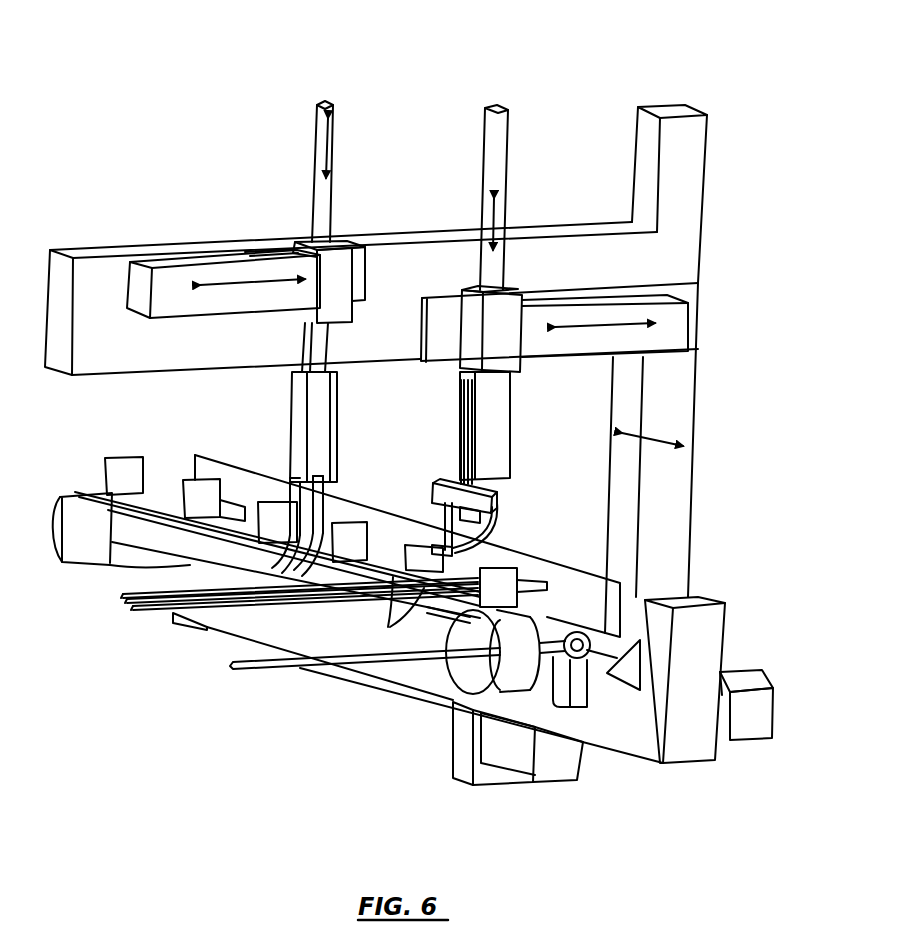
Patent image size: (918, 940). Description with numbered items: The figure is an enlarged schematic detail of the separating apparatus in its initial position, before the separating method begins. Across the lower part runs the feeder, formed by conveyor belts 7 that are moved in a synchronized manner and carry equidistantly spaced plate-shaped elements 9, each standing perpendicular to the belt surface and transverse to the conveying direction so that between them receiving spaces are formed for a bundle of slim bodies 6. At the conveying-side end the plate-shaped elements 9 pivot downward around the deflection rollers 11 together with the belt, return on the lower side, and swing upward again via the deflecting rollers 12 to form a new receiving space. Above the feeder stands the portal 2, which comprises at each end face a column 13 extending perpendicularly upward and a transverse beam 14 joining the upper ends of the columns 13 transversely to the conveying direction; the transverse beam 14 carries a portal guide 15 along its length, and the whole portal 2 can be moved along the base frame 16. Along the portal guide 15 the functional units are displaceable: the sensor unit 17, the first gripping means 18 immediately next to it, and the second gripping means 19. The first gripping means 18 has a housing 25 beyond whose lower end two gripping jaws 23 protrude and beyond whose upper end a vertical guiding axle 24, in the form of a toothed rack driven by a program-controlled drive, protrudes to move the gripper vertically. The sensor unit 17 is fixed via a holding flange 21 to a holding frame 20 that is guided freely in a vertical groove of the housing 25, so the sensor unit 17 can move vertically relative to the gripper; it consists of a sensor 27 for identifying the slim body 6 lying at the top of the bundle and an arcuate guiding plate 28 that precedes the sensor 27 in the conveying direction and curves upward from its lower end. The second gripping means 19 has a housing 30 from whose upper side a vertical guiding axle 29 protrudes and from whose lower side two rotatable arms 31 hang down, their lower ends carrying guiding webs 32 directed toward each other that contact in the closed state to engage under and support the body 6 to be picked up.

The portal 2 is at (583, 100).
The slim bodies 6 is at (423, 590).
The conveyor belts 7 is at (152, 500).
The plate-shaped elements 9 is at (503, 583).
The deflection rollers 11 is at (467, 678).
The deflecting rollers 12 is at (73, 563).
The column 13 is at (686, 398).
The transverse beam 14 is at (222, 248).
The portal guide 15 is at (98, 297).
The base frame 16 is at (648, 737).
The sensor unit 17 is at (512, 490).
The first gripping means 18 is at (440, 400).
The second gripping means 19 is at (340, 386).
The holding frame 20 is at (450, 453).
The holding flange 21 is at (447, 483).
The gripping jaws 23 is at (467, 517).
The vertical guiding axle 24 is at (500, 158).
The housing 25 is at (512, 392).
The sensor 27 is at (440, 545).
The arcuate guiding plate 28 is at (495, 512).
The vertical guiding axle 29 is at (328, 194).
The housing 30 is at (300, 402).
The rotatable arms 31 is at (290, 478).
The guiding webs 32 is at (293, 553).